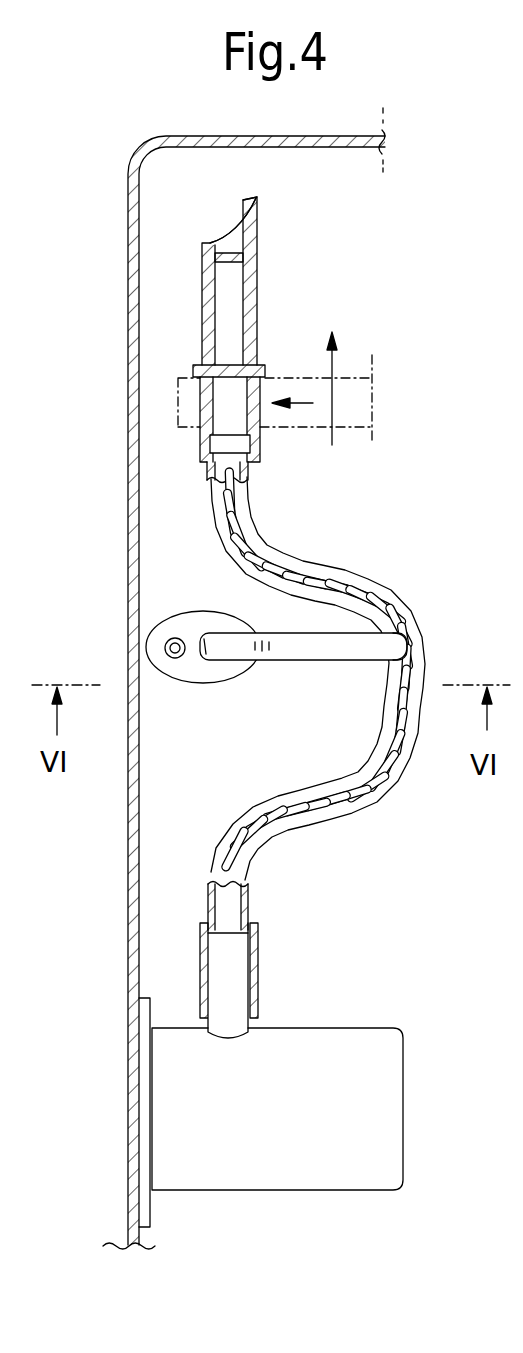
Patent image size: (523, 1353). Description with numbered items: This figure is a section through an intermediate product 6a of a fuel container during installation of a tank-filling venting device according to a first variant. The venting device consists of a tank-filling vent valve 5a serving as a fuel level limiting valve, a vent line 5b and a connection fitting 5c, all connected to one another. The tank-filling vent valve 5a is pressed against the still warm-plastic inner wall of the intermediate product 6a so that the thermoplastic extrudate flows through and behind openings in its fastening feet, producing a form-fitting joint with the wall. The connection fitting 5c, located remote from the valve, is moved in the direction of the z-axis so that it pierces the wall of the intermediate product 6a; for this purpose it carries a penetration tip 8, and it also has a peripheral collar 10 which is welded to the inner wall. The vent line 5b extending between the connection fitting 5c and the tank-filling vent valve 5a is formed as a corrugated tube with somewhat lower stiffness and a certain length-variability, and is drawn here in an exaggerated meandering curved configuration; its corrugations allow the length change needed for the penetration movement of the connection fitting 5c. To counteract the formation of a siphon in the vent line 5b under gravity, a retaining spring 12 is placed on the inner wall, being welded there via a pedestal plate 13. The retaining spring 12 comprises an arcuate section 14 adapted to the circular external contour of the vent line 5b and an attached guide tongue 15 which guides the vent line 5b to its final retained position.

The tank-filling vent valve 5a is at (373, 1113).
The vent line 5b is at (346, 571).
The connection fitting 5c is at (263, 309).
The intermediate product 6a is at (133, 949).
The penetration tip 8 is at (259, 191).
The peripheral collar 10 is at (193, 370).
The retaining spring 12 is at (321, 658).
The pedestal plate 13 is at (212, 684).
The arcuate section 14 is at (233, 641).
The guide tongue 15 is at (388, 643).